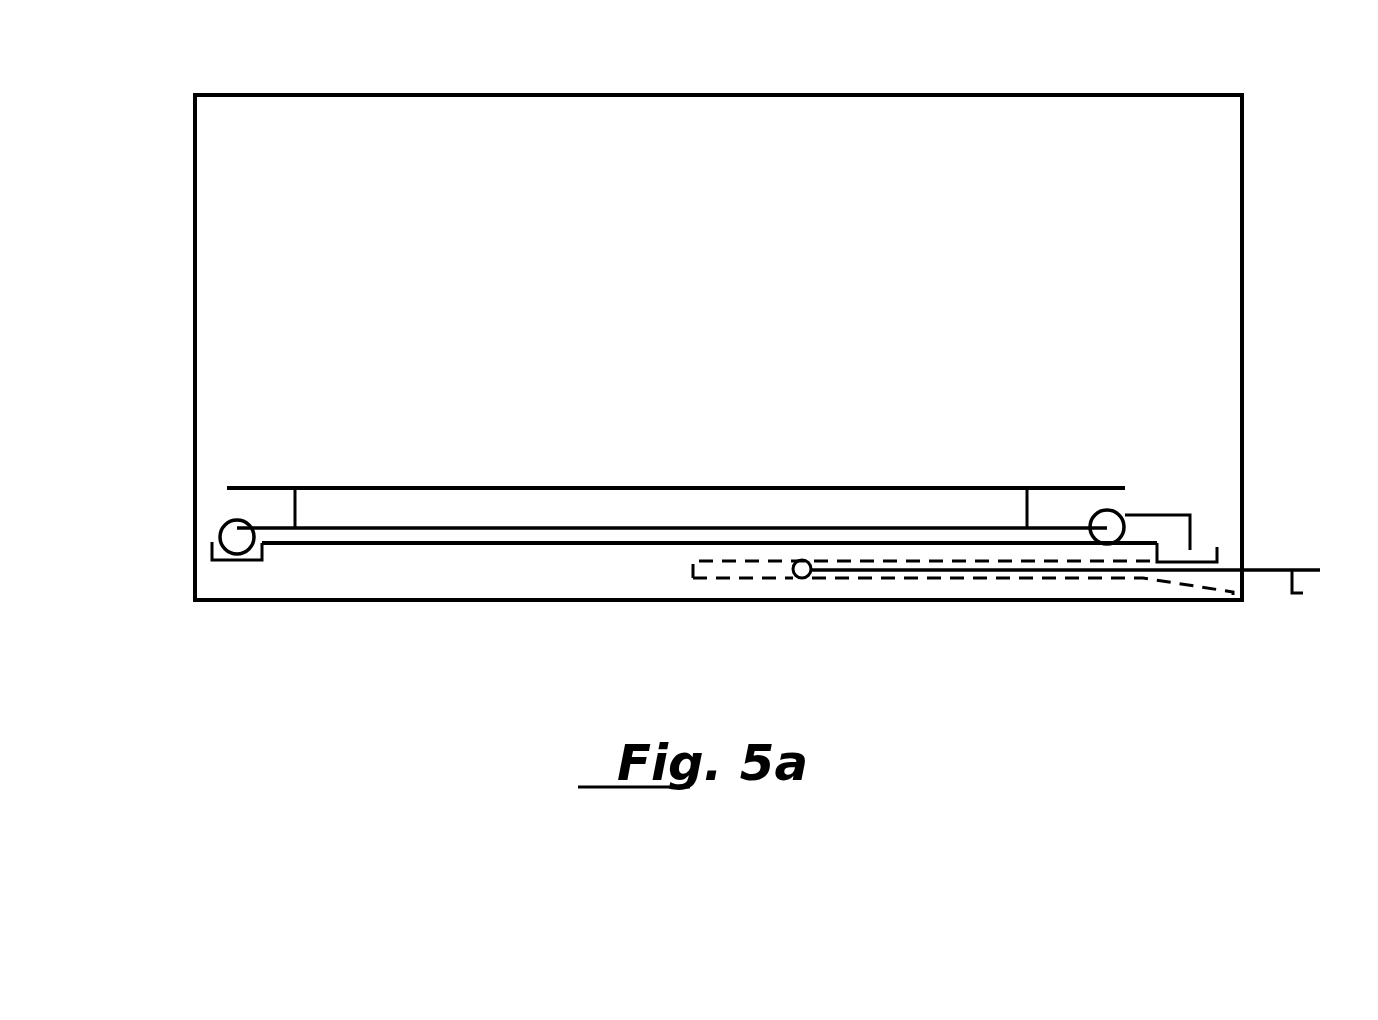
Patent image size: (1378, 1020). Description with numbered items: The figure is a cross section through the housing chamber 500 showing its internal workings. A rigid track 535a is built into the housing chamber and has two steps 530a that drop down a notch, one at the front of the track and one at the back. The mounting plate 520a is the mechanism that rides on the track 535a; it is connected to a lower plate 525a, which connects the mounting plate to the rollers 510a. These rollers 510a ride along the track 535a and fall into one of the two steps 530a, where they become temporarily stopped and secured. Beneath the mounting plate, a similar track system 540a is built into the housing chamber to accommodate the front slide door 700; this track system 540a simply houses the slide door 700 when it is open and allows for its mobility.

The housing assembly 500 is at (740, 63).
The rollers 510a is at (218, 516).
The mounting plate 520a is at (325, 488).
The spacer frame 525a is at (296, 508).
The steps 530a is at (252, 563).
The rigid track 535a is at (590, 548).
The track system 540a is at (735, 579).
The front slide door 700 is at (1270, 574).